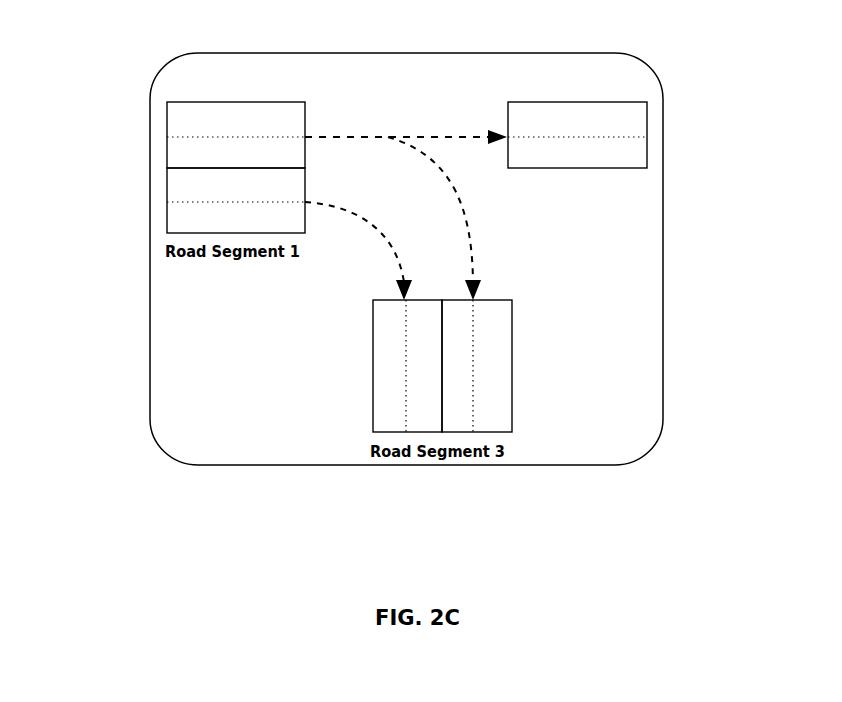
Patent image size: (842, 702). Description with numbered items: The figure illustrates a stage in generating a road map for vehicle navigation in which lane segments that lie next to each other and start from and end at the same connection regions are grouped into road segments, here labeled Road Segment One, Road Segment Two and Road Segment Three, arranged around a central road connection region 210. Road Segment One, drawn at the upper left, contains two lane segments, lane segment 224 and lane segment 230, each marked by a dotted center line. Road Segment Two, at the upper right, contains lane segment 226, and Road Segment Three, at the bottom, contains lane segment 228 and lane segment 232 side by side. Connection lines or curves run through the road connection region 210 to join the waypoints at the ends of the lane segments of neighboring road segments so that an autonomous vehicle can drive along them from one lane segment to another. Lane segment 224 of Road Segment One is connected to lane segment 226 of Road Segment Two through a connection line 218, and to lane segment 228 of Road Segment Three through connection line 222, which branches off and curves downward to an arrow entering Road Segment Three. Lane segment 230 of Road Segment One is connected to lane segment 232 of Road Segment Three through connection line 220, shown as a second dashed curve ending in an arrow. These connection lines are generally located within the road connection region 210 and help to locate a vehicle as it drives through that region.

The road connection region 210 is at (345, 125).
The connection line 218 is at (410, 135).
The connection line 220 is at (398, 257).
The connection line 222 is at (468, 242).
The lane segment 224 is at (208, 148).
The lane segment 226 is at (612, 148).
The lane segment 228 is at (497, 410).
The lane segment 230 is at (218, 207).
The lane segment 232 is at (406, 412).